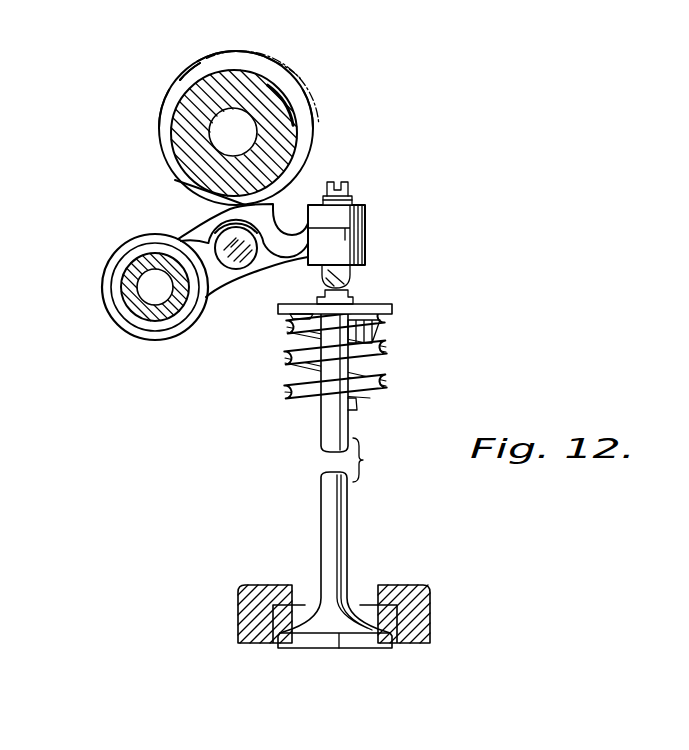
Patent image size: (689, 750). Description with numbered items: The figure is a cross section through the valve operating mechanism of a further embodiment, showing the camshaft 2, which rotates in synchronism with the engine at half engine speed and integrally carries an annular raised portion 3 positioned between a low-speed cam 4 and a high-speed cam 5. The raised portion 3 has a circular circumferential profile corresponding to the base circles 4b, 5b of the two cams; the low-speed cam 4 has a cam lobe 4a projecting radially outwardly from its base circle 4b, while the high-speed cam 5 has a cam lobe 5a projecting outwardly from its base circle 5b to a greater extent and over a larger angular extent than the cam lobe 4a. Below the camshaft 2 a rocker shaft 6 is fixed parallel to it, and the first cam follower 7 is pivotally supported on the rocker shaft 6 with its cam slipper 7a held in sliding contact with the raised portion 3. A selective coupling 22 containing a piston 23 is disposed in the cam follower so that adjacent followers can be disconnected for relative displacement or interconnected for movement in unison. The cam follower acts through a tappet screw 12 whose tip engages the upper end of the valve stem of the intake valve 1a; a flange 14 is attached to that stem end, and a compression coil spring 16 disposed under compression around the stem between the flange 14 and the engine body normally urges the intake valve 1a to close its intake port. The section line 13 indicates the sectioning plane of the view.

The intake valve 1a is at (343, 436).
The camshaft 2 is at (187, 88).
The annular raised portion 3 is at (162, 117).
The low-speed cam 4 is at (253, 55).
The cam lobe 4a is at (312, 103).
The base circle 4b is at (197, 68).
The high-speed cam 5 is at (307, 75).
The cam lobe 5a is at (292, 62).
The base circle 5b is at (190, 71).
The rocker shaft 6 is at (105, 283).
The first cam follower 7 is at (244, 283).
The cam slipper 7a is at (175, 180).
The tappet screw 12 is at (343, 181).
The tappet screw 13 is at (392, 143).
The flange 14 is at (371, 303).
The compression coil spring 16 is at (393, 348).
The second selective coupling 22 is at (210, 243).
The piston 23 is at (246, 258).